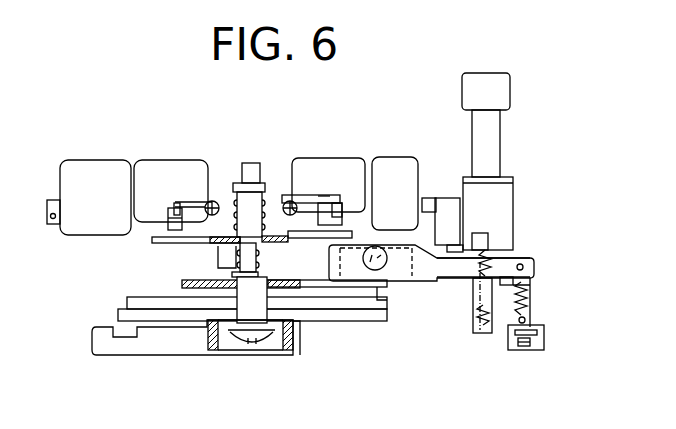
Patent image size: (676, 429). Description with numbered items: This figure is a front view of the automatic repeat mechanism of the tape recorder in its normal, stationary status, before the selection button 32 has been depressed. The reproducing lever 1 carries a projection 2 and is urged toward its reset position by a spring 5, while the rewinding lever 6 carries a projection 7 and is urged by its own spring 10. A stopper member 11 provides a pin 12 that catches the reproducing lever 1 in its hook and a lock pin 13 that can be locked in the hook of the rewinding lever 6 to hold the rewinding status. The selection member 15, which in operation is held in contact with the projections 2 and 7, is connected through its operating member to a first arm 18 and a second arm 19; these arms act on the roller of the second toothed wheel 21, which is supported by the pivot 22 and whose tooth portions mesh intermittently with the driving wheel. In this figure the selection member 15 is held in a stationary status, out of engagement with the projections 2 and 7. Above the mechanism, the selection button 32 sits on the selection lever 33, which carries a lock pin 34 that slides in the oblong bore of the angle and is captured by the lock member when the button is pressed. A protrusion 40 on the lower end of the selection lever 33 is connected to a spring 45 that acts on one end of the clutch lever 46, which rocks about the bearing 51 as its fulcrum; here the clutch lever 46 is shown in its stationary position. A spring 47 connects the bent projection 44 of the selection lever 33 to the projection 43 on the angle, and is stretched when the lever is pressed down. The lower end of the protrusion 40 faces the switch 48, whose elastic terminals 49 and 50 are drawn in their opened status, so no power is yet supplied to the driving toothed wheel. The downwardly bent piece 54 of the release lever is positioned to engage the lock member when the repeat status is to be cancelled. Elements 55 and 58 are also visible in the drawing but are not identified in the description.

The reproducing lever 1 is at (318, 196).
The projection 2 is at (323, 203).
The spring 5 is at (291, 201).
The rewinding lever 6 is at (206, 203).
The projection 7 is at (163, 218).
The spring 10 is at (217, 202).
The stopper member 11 is at (52, 202).
The pin 12 is at (363, 210).
The lock pin 13 is at (176, 207).
The selection member 15 is at (160, 305).
The first arm 18 is at (148, 340).
The second arm 19 is at (272, 345).
The second toothed wheel 21 is at (195, 300).
The pivot 22 is at (230, 251).
The selection button 32 is at (490, 92).
The selection lever 33 is at (487, 133).
The lock pin 34 is at (505, 199).
The protrusion 40 is at (508, 318).
The projection 43 is at (482, 233).
The bent projection 44 is at (478, 318).
The spring 45 is at (528, 280).
The clutch lever 46 is at (433, 270).
The spring 47 is at (483, 296).
The switch 48 is at (545, 335).
The elastic terminal 49 is at (528, 320).
The elastic terminal 50 is at (536, 345).
The bearing 51 is at (388, 257).
The downwardly bent piece 54 is at (436, 198).
The key cap 55 is at (410, 222).
The stud 58 is at (265, 205).